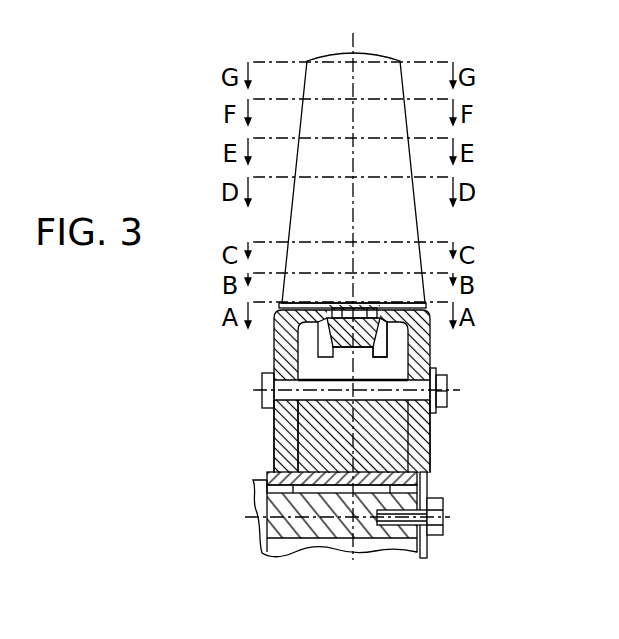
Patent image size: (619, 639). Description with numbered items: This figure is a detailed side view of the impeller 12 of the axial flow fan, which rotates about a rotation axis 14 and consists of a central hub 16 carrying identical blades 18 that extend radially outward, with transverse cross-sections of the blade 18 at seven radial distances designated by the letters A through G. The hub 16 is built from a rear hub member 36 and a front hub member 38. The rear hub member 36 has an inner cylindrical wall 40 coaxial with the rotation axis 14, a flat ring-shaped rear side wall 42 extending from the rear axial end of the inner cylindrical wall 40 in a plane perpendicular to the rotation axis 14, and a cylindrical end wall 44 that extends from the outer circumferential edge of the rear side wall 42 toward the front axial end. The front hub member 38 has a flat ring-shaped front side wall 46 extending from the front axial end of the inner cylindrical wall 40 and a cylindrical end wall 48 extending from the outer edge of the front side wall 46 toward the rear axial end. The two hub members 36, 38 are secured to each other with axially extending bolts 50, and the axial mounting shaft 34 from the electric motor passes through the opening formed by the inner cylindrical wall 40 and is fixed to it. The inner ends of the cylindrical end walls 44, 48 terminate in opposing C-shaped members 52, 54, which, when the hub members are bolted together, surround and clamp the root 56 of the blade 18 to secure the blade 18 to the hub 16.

The impeller 12 is at (527, 406).
The rotation axis 14 is at (262, 528).
The central hub 16 is at (285, 349).
The blade 18 is at (382, 53).
The axial mounting shaft 34 is at (262, 514).
The rear hub member 36 is at (282, 447).
The front hub member 38 is at (420, 440).
The inner cylindrical wall 40 is at (337, 464).
The rear side wall 42 is at (298, 410).
The cylindrical end wall 44 is at (330, 357).
The front side wall 46 is at (424, 462).
The cylindrical end wall 48 is at (396, 329).
The bolts 50 is at (447, 390).
The C-shaped member 52 is at (262, 391).
The C-shaped member 54 is at (380, 343).
The root 56 is at (347, 341).